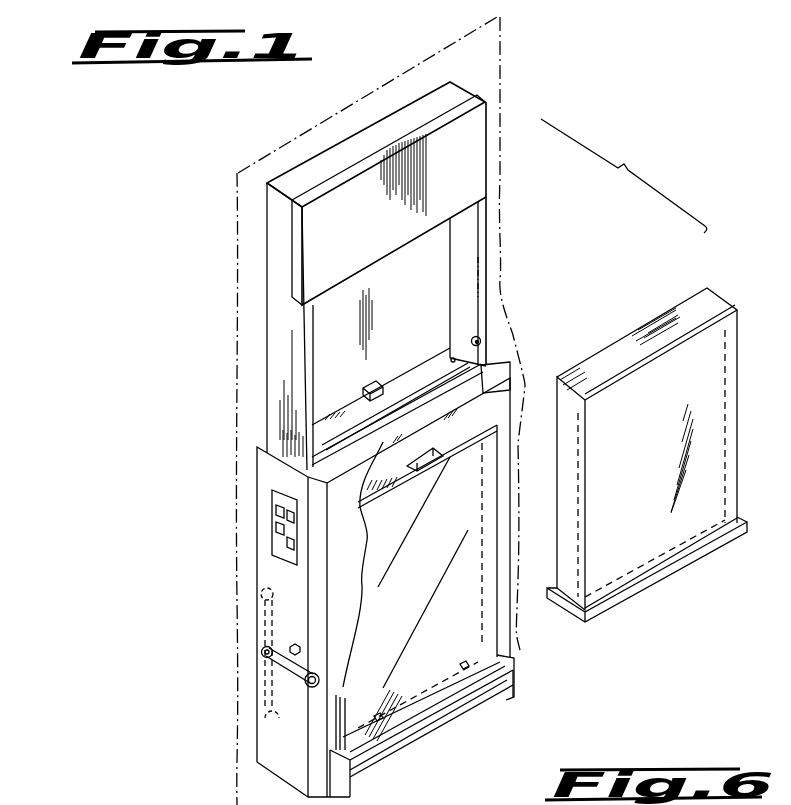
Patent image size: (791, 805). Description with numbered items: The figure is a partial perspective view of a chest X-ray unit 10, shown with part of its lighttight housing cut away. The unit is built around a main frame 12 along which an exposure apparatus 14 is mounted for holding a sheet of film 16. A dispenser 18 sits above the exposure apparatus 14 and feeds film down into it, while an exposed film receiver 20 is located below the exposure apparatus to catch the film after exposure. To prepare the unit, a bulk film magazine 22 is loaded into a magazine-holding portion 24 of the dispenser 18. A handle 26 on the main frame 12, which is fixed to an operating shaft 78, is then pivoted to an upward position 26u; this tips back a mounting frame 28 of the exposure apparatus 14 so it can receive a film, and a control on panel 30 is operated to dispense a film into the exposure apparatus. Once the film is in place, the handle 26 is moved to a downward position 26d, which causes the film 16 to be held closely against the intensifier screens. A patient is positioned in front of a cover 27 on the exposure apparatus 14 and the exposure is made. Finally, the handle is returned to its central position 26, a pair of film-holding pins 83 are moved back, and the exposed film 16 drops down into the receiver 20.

The chest X-ray unit 10 is at (263, 277).
The main frame 12 is at (260, 477).
The exposure apparatus 14 is at (498, 632).
The sheet of film 16 is at (578, 537).
The dispenser 18 is at (480, 238).
The exposed film receiver 20 is at (459, 728).
The bulk film magazine 22 is at (483, 298).
The magazine-holding portion 24 is at (464, 276).
The handle 26 is at (307, 676).
The upward position of handle 26u is at (262, 623).
The downward position of handle 26d is at (260, 722).
The cover 27 is at (353, 638).
The mounting frame 28 is at (481, 413).
The panel 30 is at (273, 534).
The operating shaft 78 is at (262, 653).
The film-holding pins 83 is at (377, 720).